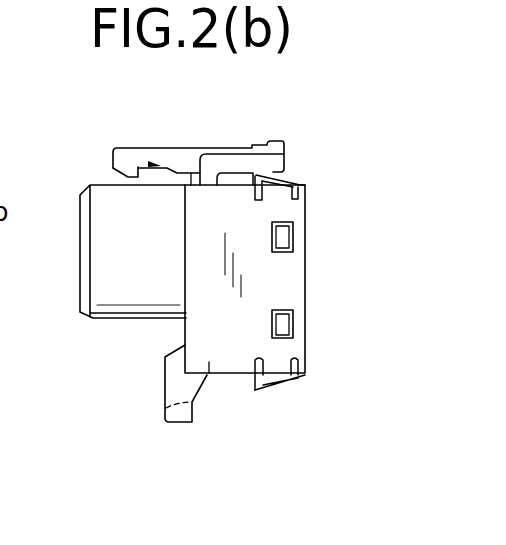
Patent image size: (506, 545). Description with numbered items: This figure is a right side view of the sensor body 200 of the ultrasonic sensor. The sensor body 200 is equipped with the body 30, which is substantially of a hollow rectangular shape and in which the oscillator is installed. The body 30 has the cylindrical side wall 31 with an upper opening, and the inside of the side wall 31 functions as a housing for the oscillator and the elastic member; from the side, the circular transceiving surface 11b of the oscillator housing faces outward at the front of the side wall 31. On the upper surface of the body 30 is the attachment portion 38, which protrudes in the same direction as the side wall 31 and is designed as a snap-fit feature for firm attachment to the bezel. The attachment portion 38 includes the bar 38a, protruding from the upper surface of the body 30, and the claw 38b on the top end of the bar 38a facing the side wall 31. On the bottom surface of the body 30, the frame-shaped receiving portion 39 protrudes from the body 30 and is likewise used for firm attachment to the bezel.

The sensor body 200 is at (190, 286).
The body 30 is at (308, 244).
The side wall 31 is at (113, 303).
The attachment portion 38 is at (161, 137).
The bar 38a is at (183, 148).
The claw 38b is at (120, 177).
The receiving portion 39 is at (168, 424).
The transceiving surface 11b is at (98, 285).